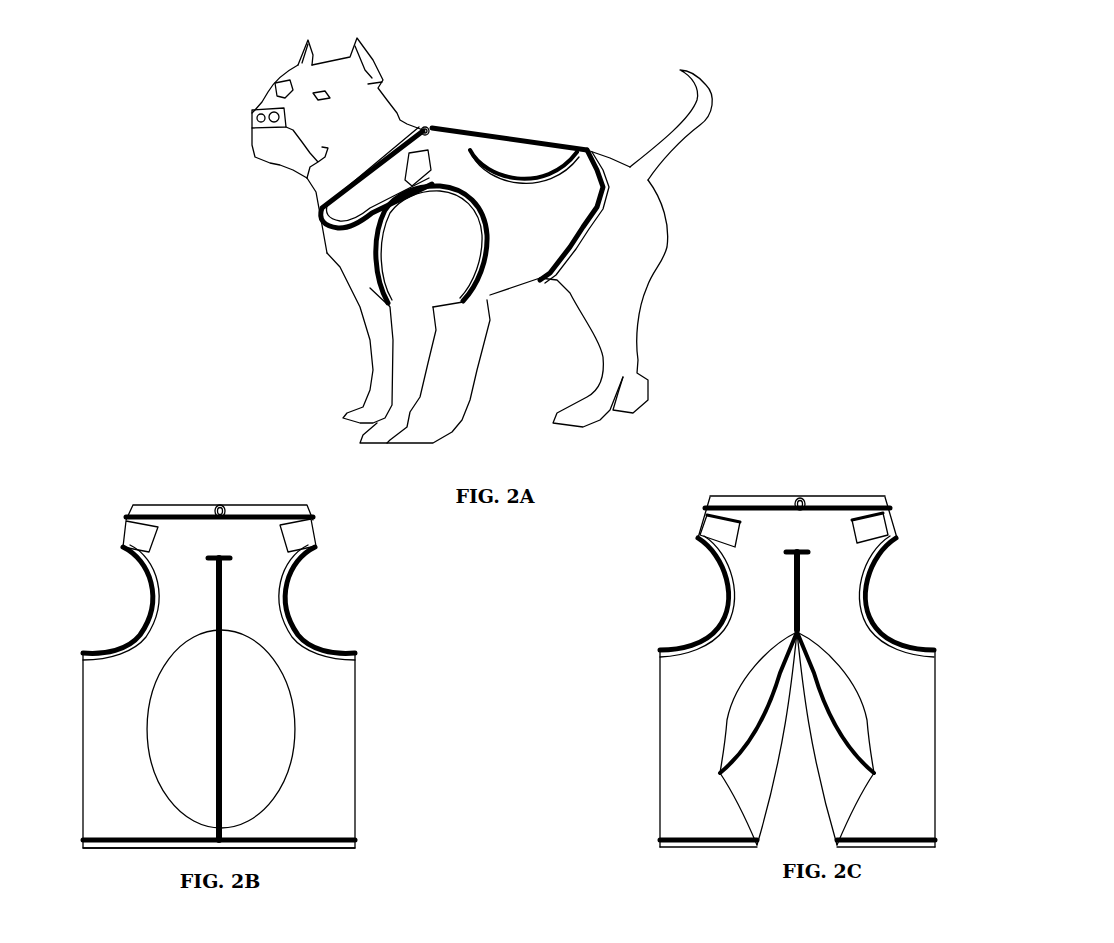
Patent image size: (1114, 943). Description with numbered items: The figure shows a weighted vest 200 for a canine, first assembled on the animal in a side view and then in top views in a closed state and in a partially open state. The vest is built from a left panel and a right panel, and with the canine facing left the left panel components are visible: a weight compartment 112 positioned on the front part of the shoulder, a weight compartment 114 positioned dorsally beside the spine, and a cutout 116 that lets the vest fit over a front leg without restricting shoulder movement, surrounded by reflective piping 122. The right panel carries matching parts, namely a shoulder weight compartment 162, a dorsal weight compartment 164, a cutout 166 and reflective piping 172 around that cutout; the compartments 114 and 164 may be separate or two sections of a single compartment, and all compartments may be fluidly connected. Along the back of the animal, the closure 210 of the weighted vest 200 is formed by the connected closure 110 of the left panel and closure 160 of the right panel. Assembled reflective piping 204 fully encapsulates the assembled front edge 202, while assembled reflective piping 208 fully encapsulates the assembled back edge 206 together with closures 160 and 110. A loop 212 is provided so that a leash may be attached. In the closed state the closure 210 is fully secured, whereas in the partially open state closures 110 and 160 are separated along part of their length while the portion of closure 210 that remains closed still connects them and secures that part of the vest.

In FIG. 2A, the weighted vest 200 is at (256, 233).
In FIG. 2A, the assembled front edge 202 is at (350, 207).
In FIG. 2B, the assembled front edge 202 is at (273, 506).
In FIG. 2C, the assembled front edge 202 is at (769, 491).
In FIG. 2A, the assembled reflective piping 204 is at (322, 220).
In FIG. 2B, the assembled reflective piping 204 is at (216, 506).
In FIG. 2C, the assembled reflective piping 204 is at (819, 501).
In FIG. 2A, the loop 212 is at (427, 126).
In FIG. 2B, the loop 212 is at (214, 507).
In FIG. 2C, the loop 212 is at (803, 496).
In FIG. 2A, the weight compartment 112 is at (430, 152).
In FIG. 2B, the weight compartment 112 is at (126, 522).
In FIG. 2C, the weight compartment 112 is at (716, 518).
In FIG. 2A, the closure 210 is at (497, 141).
In FIG. 2B, the closure 210 is at (222, 617).
In FIG. 2C, the closure 210 is at (793, 571).
In FIG. 2A, the weight compartment 114 is at (529, 164).
In FIG. 2B, the weight compartment 114 is at (180, 705).
In FIG. 2C, the weight compartment 114 is at (753, 702).
In FIG. 2A, the assembled back edge 206 is at (603, 208).
In FIG. 2B, the assembled back edge 206 is at (332, 848).
In FIG. 2C, the assembled back edge 206 is at (672, 847).
In FIG. 2A, the assembled reflective piping 208 is at (578, 238).
In FIG. 2B, the assembled reflective piping 208 is at (115, 830).
In FIG. 2C, the assembled reflective piping 208 is at (883, 827).
In FIG. 2A, the reflective piping 122 is at (372, 252).
In FIG. 2B, the reflective piping 122 is at (147, 612).
In FIG. 2C, the reflective piping 122 is at (716, 552).
In FIG. 2A, the cutout 116 is at (373, 280).
In FIG. 2B, the cutout 116 is at (145, 587).
In FIG. 2C, the cutout 116 is at (718, 577).
In FIG. 2B, the weight compartment 162 is at (298, 539).
In FIG. 2C, the weight compartment 162 is at (864, 518).
In FIG. 2B, the cutout 166 is at (294, 607).
In FIG. 2C, the cutout 166 is at (878, 557).
In FIG. 2B, the reflective piping 172 is at (293, 630).
In FIG. 2C, the reflective piping 172 is at (883, 625).
In FIG. 2B, the weight compartment 164 is at (266, 710).
In FIG. 2C, the weight compartment 164 is at (844, 677).
In FIG. 2C, the closure 160 is at (811, 650).
In FIG. 2C, the closure 110 is at (780, 655).